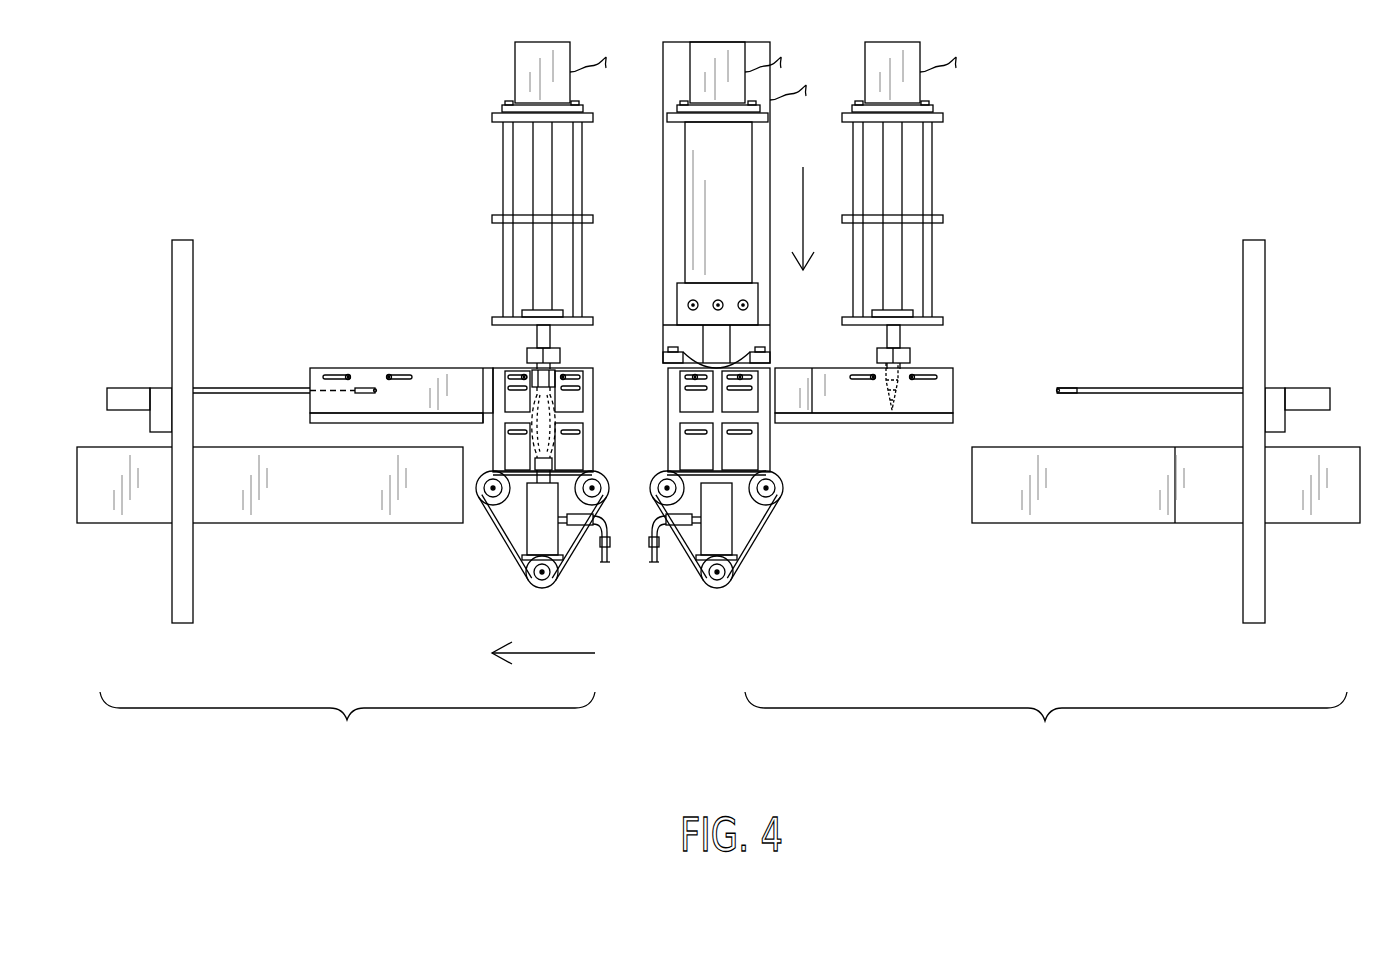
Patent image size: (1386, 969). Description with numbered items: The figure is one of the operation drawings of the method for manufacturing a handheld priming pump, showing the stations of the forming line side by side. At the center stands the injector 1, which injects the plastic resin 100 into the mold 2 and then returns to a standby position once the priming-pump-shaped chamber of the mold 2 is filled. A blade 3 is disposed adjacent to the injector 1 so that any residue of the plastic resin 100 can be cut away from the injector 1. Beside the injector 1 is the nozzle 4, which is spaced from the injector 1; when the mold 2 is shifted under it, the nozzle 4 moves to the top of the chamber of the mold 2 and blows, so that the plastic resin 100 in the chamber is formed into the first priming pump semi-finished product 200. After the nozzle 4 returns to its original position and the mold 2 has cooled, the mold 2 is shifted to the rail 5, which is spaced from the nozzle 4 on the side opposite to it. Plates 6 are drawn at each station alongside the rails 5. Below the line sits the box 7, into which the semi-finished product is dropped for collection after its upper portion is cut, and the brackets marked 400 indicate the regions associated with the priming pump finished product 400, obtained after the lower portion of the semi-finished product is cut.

The injector 1 is at (722, 355).
The mold 2 is at (492, 543).
The blade 3 is at (747, 419).
The nozzle 4 is at (908, 403).
The rail 5 is at (252, 378).
The slide plate 6 is at (364, 358).
The box 7 is at (328, 533).
The plastic resin 100 is at (730, 397).
The first priming pump semi-finished product 200 is at (520, 447).
The priming pump finished product 400 is at (723, 726).